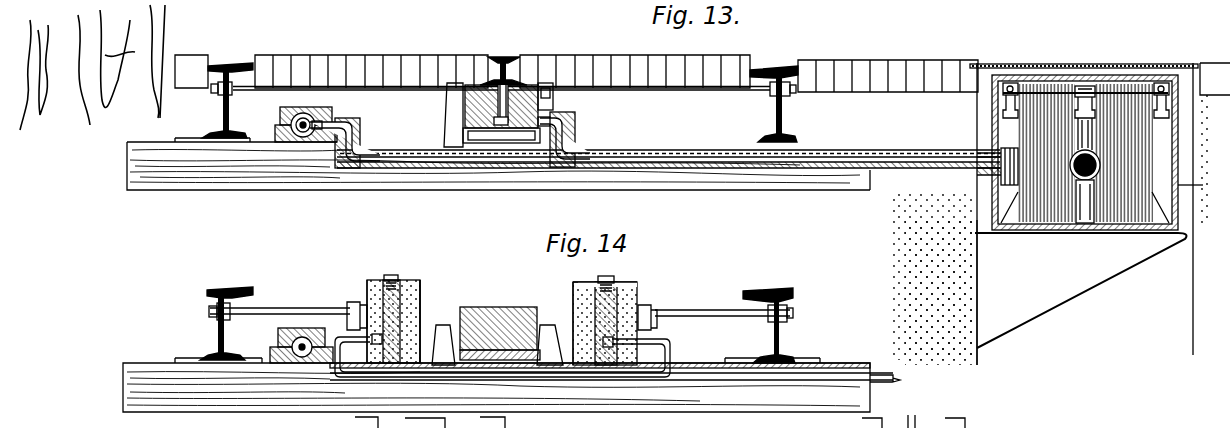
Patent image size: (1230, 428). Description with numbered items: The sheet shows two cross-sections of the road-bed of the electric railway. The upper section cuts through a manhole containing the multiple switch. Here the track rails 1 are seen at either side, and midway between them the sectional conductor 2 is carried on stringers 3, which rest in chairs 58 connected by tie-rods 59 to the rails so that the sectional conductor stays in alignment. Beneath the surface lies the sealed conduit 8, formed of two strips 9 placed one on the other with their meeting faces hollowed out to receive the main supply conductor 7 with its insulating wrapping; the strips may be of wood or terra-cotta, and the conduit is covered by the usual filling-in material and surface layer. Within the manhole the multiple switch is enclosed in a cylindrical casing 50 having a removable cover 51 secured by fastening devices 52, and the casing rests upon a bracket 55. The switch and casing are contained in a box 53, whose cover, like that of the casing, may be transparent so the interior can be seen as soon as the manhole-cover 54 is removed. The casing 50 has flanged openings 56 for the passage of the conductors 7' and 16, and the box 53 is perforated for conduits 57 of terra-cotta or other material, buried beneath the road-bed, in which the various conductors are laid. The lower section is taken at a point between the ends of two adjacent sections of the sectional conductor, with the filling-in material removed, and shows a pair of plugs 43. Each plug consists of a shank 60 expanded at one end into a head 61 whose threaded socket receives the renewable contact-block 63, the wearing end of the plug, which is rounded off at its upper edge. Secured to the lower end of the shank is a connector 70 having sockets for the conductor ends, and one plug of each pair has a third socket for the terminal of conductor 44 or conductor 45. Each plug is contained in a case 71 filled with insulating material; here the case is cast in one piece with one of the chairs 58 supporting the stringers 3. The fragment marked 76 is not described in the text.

In FIG. 13, the track rails 1 is at (236, 64).
In FIG. 14, the track rails 1 is at (219, 287).
In FIG. 13, the sectional conductor rails 2 is at (500, 57).
In FIG. 13, the stringers 3 is at (530, 95).
In FIG. 14, the stringers 3 is at (496, 310).
In FIG. 14, the main supply conductor 7 is at (338, 307).
In FIG. 13, the conductor 7' is at (450, 159).
In FIG. 13, the sealed conduit 8 is at (303, 138).
In FIG. 14, the sealed conduit 8 is at (302, 361).
In FIG. 13, the conduit strips 9 is at (280, 111).
In FIG. 14, the conduit strips 9 is at (278, 330).
In FIG. 13, the conductor 16 is at (678, 162).
In FIG. 14, the plugs 43 is at (380, 278).
In FIG. 14, the conductor 44 is at (894, 378).
In FIG. 14, the conductor 45 is at (496, 385).
In FIG. 13, the cylindrical casing 50 is at (1085, 152).
In FIG. 13, the removable cover 51 is at (1035, 90).
In FIG. 13, the fastening devices 52 is at (1098, 88).
In FIG. 13, the box 53 is at (1204, 183).
In FIG. 13, the manhole-cover 54 is at (1178, 63).
In FIG. 13, the bracket 55 is at (1080, 290).
In FIG. 13, the flanged openings 56 is at (1069, 168).
In FIG. 13, the conduits 57 is at (518, 170).
In FIG. 13, the chairs 58 is at (456, 140).
In FIG. 14, the chairs 58 is at (518, 355).
In FIG. 13, the tie-rods 59 is at (360, 85).
In FIG. 14, the tie-rods 59 is at (283, 307).
In FIG. 14, the shank 60 is at (443, 325).
In FIG. 14, the head 61 is at (422, 285).
In FIG. 14, the contact-block 63 is at (393, 275).
In FIG. 14, the connector 70 is at (386, 345).
In FIG. 14, the case 71 is at (368, 292).
In FIG. 14, the fragment 76 is at (918, 422).